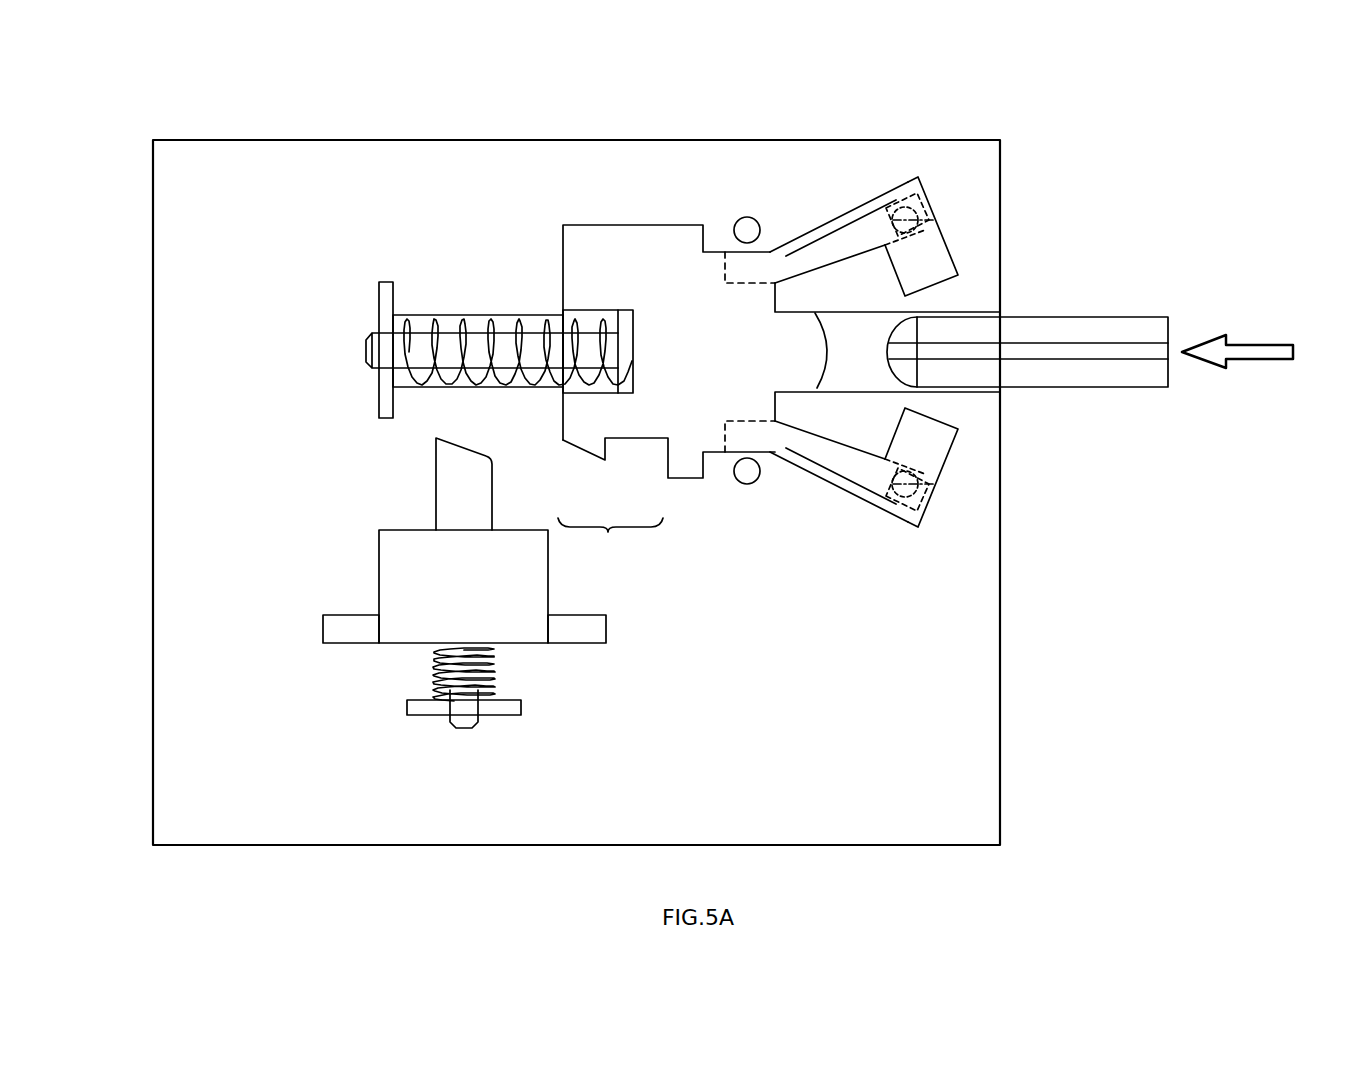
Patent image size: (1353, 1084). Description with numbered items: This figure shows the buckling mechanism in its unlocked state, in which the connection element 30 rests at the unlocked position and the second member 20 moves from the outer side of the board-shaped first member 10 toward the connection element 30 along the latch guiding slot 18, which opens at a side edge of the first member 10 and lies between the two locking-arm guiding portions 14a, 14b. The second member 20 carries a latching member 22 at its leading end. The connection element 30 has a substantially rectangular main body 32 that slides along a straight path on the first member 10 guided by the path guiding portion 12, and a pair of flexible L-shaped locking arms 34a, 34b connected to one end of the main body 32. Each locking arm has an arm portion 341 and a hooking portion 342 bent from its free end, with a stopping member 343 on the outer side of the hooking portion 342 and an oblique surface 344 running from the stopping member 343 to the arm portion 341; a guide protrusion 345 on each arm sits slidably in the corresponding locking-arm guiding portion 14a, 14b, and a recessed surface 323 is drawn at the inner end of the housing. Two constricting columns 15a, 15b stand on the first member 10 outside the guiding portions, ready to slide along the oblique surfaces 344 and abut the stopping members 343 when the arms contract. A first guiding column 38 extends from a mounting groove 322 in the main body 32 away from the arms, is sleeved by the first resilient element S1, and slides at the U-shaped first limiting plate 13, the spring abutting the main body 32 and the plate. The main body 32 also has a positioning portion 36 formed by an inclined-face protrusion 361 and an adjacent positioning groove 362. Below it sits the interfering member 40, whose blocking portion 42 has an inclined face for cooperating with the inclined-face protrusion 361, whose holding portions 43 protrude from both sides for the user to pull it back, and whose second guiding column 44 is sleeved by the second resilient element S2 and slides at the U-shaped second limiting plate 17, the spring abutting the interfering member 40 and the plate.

The first member 10 is at (1002, 650).
The path guiding portion 12 is at (503, 320).
The first limiting plate 13 is at (385, 300).
The locking-arm guiding portion 14a is at (800, 233).
The locking-arm guiding portion 14b is at (798, 460).
The constricting column 15a is at (746, 228).
The constricting column 15b is at (746, 474).
The second limiting plate 17 is at (502, 706).
The latch guiding slot 18 is at (843, 366).
The second member 20 is at (1100, 319).
The latching member 22 is at (895, 350).
The connection element 30 is at (598, 226).
The main body 32 is at (656, 240).
The mounting groove 322 is at (586, 318).
The socket surface 323 is at (826, 348).
The locking arm 34a is at (946, 232).
The locking arm 34b is at (946, 468).
The arm portion 341 is at (847, 242).
The hooking portion 342 is at (942, 262).
The stopping member 343 is at (919, 179).
The oblique surface 344 is at (897, 203).
The guide protrusion 345 is at (918, 218).
The positioning portion 36 is at (610, 540).
The inclined-face protrusion 361 is at (588, 442).
The positioning groove 362 is at (642, 447).
The first guiding column 38 is at (370, 352).
The interfering member 40 is at (379, 565).
The blocking portion 42 is at (452, 462).
The holding portion 43 is at (337, 630).
The second guiding column 44 is at (462, 714).
The first resilient element S1 is at (458, 319).
The second resilient element S2 is at (433, 677).